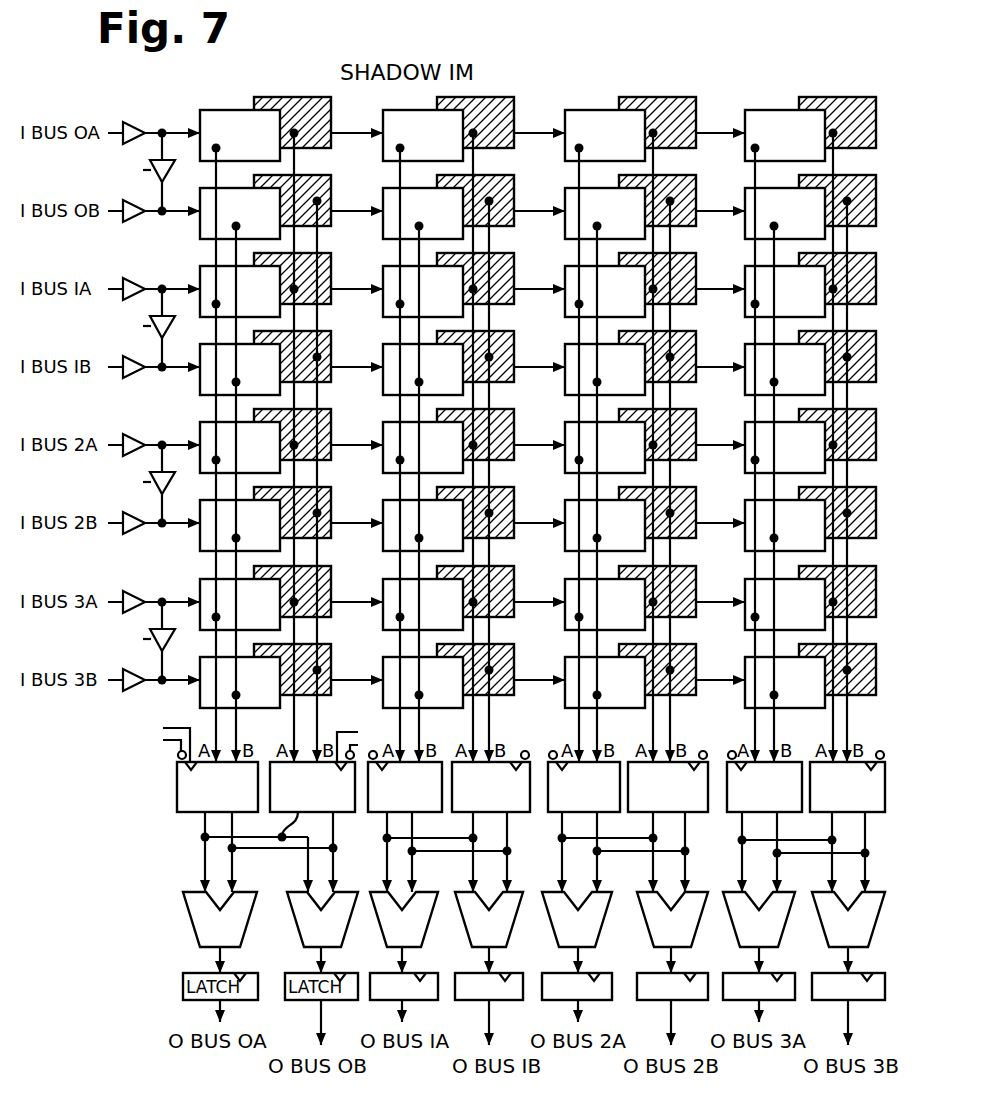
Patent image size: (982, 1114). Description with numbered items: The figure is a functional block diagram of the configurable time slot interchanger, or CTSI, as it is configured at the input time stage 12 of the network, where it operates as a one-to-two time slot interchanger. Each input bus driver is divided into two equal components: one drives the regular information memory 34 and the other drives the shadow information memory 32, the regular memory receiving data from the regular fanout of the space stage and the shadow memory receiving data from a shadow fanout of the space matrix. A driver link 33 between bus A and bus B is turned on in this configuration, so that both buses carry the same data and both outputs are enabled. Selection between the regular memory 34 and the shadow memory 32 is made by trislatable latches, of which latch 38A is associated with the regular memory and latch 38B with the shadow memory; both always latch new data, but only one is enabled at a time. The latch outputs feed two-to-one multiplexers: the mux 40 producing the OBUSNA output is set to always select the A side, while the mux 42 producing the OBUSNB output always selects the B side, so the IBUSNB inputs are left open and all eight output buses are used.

The input time stage 12 is at (520, 412).
The shadow information memory 32 is at (262, 97).
The regular information memory 34 is at (233, 115).
The driver link 33 is at (150, 170).
The trislatable latch 38A is at (183, 800).
The trislatable latch 38B is at (290, 822).
The 2:1 multiplexer 40 is at (190, 903).
The 2:1 multiplexer 42 is at (295, 893).